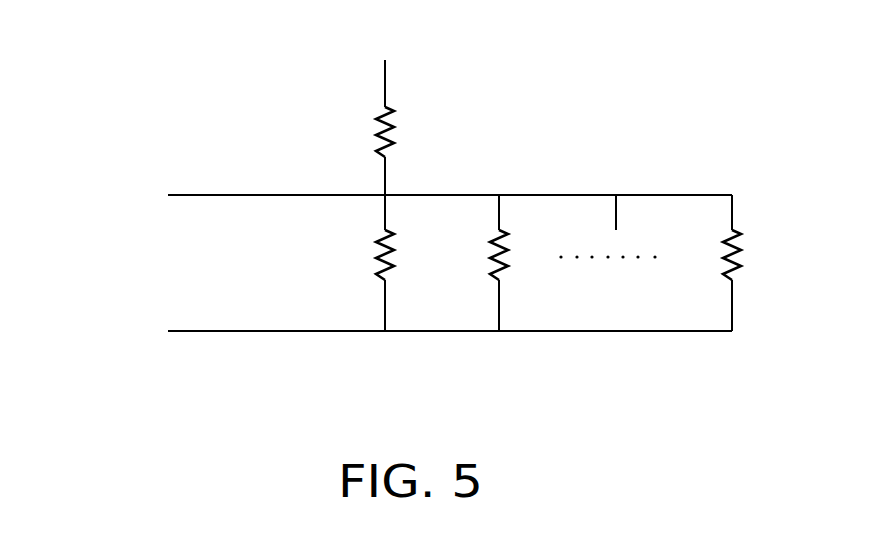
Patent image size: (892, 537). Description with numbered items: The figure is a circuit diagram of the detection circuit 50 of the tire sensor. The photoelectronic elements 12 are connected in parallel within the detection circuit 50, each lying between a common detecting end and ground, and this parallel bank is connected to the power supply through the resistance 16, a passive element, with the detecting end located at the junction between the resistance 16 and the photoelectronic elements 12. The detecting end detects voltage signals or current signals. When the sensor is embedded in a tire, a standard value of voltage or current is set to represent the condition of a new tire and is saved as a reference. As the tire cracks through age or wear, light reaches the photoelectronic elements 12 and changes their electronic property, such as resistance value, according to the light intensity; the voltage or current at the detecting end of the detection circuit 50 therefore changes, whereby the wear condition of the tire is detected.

The detection circuit 50 is at (14, 34).
The resistance 16 is at (378, 117).
The photoelectronic elements 12 is at (488, 268).